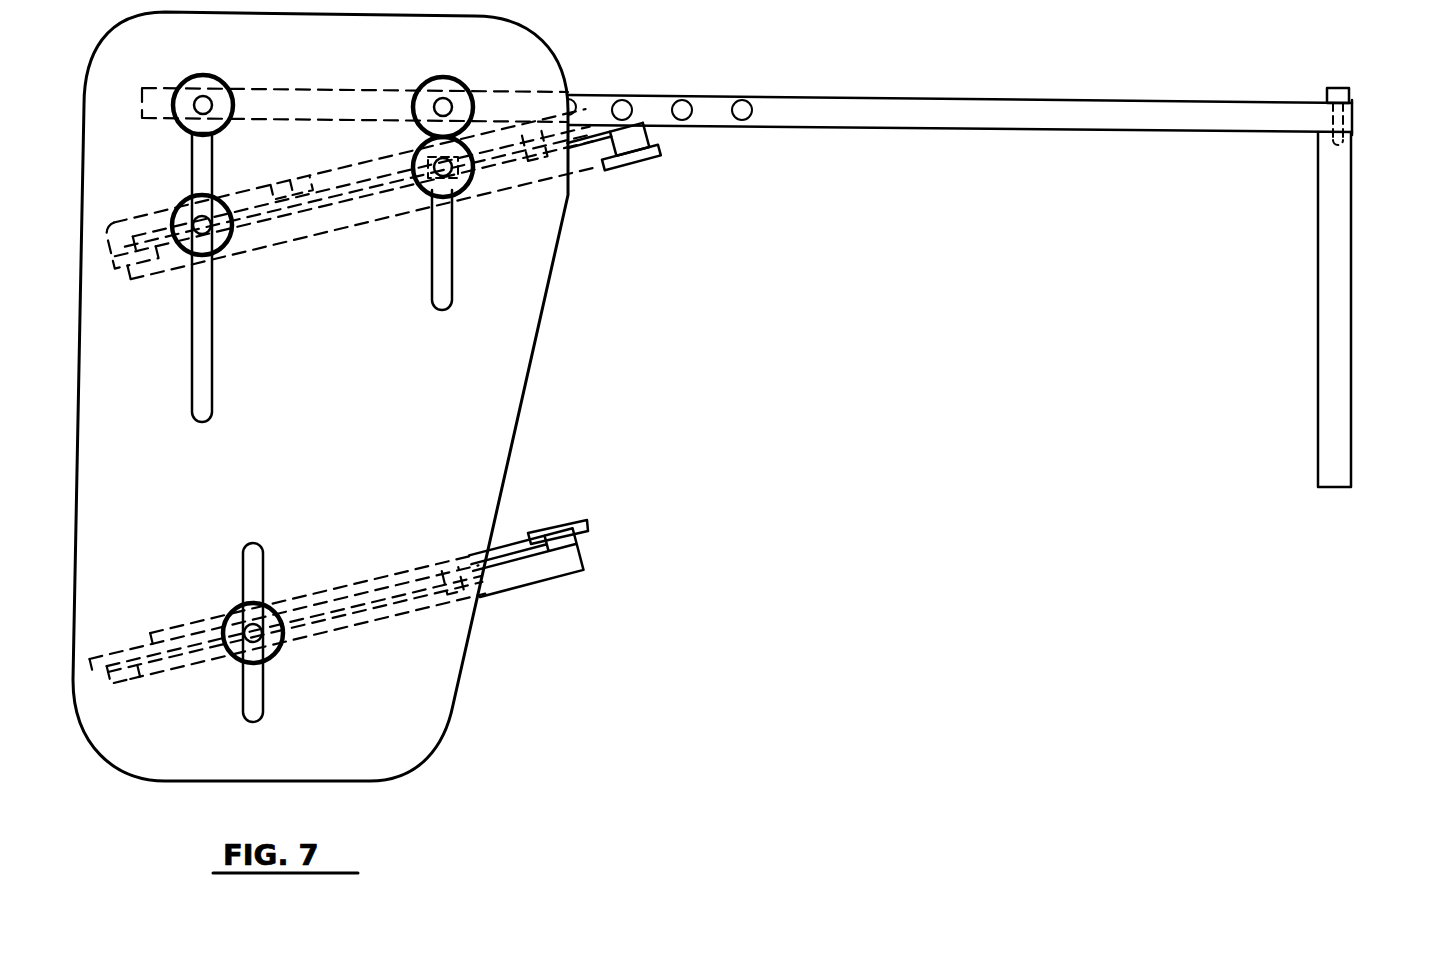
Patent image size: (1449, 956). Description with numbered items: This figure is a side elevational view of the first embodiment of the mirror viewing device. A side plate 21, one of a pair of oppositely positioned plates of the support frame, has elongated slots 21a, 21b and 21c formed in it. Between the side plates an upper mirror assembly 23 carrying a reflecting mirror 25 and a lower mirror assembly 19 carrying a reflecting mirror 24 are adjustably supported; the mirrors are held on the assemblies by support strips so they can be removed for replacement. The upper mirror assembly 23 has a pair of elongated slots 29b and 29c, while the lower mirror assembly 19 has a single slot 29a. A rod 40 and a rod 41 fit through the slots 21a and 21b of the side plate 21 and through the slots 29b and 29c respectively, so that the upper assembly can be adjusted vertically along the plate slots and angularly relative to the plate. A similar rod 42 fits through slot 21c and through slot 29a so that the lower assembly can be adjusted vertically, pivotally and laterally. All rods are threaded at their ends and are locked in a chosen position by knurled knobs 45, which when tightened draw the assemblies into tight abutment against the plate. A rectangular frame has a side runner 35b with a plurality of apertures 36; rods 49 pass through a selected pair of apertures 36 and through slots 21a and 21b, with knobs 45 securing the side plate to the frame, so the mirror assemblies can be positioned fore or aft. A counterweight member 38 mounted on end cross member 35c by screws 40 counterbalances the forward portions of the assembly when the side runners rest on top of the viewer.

The mirror assembly 19 is at (506, 595).
The side plate 21 is at (527, 296).
The elongated slot 21a is at (205, 325).
The elongated slot 21b is at (445, 245).
The elongated slot 21c is at (250, 692).
The mirror assembly 23 is at (584, 159).
The reflecting mirror 24 is at (510, 540).
The reflecting mirror 25 is at (362, 220).
The elongated slot 29a is at (385, 622).
The elongated slot 29b is at (276, 188).
The elongated slot 29c is at (552, 170).
The side runner 35b is at (1018, 106).
The end cross member 35c is at (1353, 118).
The apertures 36 is at (742, 102).
The counterweight member 38 is at (1332, 262).
The rod 40 is at (212, 228).
The rod 41 is at (452, 176).
The rod 42 is at (260, 637).
The knurled knob 45 is at (200, 80).
The rod 49 is at (208, 103).